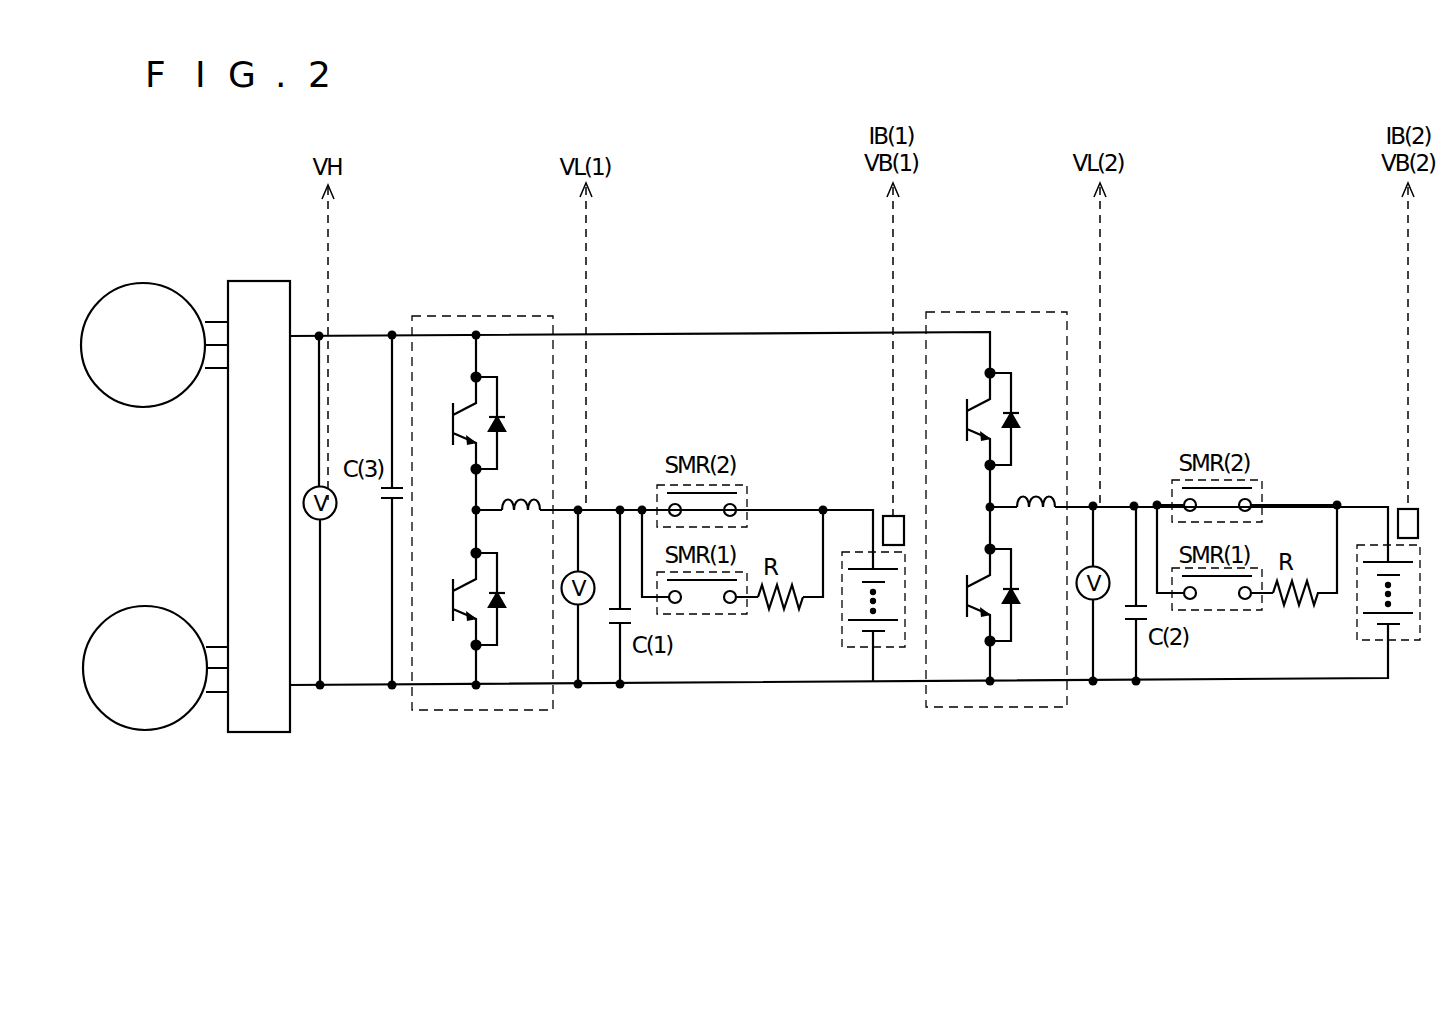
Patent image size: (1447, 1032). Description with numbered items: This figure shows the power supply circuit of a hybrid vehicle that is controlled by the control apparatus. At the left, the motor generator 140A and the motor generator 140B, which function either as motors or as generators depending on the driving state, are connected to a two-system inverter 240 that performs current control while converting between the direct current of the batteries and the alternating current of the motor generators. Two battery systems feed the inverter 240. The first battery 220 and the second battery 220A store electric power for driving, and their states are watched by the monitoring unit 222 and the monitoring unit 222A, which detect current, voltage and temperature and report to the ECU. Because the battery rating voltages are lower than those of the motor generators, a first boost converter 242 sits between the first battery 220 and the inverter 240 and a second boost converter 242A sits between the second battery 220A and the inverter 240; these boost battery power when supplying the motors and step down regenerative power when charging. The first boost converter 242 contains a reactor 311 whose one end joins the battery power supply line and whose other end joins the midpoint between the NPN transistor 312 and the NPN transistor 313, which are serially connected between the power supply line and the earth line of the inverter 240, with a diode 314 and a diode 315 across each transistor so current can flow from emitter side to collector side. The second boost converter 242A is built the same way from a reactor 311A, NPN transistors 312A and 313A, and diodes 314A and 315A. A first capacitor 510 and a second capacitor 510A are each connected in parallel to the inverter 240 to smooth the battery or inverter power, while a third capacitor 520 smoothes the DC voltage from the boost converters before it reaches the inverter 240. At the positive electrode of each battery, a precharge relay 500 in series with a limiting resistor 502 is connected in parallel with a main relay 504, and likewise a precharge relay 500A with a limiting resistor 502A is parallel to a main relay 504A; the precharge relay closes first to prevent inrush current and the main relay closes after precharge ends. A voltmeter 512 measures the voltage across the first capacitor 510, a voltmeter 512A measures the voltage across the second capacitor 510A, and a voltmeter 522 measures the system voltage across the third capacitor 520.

The motor generator 140A is at (160, 284).
The motor generator 140B is at (160, 607).
The inverter 240 is at (258, 281).
The first boost converter 242 is at (490, 316).
The second boost converter 242A is at (1007, 312).
The reactor 311 is at (520, 498).
The reactor 311A is at (1037, 497).
The NPN transistor 312 is at (462, 404).
The NPN transistor 312A is at (978, 400).
The NPN transistor 313 is at (462, 580).
The NPN transistor 313A is at (978, 578).
The diode 314 is at (505, 425).
The diode 314A is at (1020, 418).
The diode 315 is at (508, 602).
The diode 315A is at (1022, 598).
The SMR(1) 500 is at (705, 613).
The SMR(1) 500A is at (1205, 609).
The limiting resistor 502 is at (793, 579).
The limiting resistor 502A is at (1307, 577).
The SMR(2) 504 is at (747, 493).
The SMR(2) 504A is at (1262, 489).
The capacitor C(1) 510 is at (613, 641).
The capacitor C(2) 510A is at (1129, 638).
The voltmeter 512 is at (566, 600).
The voltmeter 512A is at (1082, 597).
The capacitor C(3) 520 is at (384, 515).
The voltmeter 522 is at (303, 500).
The first battery 220 is at (843, 622).
The second battery 220A is at (1357, 618).
The monitoring unit 222 is at (888, 518).
The monitoring unit 222A is at (1403, 511).